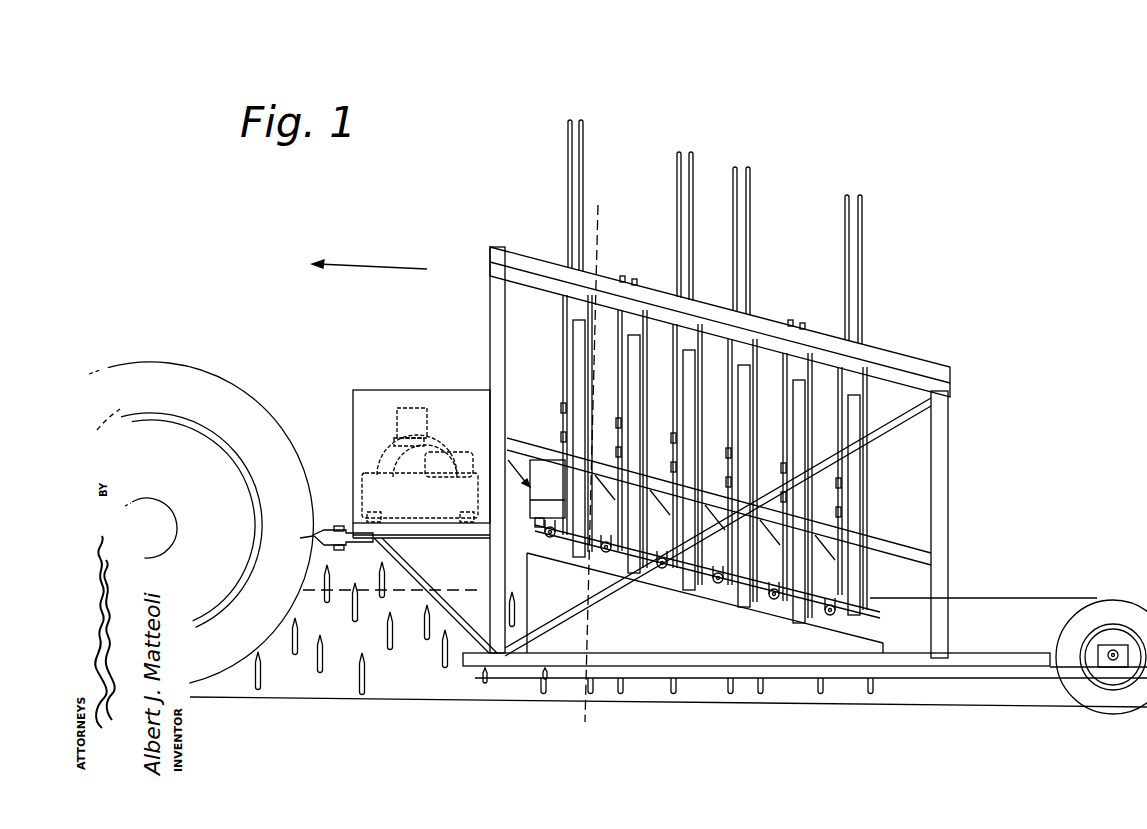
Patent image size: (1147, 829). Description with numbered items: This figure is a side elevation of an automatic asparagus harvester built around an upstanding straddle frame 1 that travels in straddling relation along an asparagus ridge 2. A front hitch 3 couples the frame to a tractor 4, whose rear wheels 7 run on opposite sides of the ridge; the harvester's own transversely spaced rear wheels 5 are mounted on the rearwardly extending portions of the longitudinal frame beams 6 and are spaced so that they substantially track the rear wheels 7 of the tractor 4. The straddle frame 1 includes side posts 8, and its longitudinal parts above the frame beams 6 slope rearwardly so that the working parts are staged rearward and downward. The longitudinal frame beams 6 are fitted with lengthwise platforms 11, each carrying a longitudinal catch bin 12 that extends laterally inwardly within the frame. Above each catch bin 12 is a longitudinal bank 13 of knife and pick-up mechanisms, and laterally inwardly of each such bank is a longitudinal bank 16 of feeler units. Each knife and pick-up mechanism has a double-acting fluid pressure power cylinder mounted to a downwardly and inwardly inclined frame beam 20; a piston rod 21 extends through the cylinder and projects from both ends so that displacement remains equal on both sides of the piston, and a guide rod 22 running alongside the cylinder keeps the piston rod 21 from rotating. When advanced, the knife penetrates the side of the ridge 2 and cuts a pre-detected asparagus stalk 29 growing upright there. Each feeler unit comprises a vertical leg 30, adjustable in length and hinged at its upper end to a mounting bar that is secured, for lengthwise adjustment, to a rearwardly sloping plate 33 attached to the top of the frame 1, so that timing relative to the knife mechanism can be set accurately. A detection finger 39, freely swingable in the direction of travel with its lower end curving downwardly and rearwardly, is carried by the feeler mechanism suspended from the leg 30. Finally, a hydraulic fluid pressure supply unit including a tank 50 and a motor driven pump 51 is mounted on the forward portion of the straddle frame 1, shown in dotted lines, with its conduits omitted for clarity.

The upstanding straddle frame 1 is at (932, 357).
The asparagus ridge 2 is at (617, 217).
The front hitch 3 is at (326, 528).
The tractor 4 is at (165, 357).
The rear wheels 5 is at (1100, 612).
The longitudinal frame beams 6 is at (1022, 672).
The rear wheels of the tractor 7 is at (262, 422).
The side posts 8 is at (492, 330).
The platforms 11 is at (977, 657).
The catch bin 12 is at (770, 647).
The bank of knife and pick-up mechanisms 13 is at (878, 479).
The bank of feeler units 16 is at (534, 539).
The inclined frame beam 20 is at (623, 357).
The piston rod 21 is at (693, 205).
The guide rod 22 is at (680, 260).
The asparagus stalk 29 is at (357, 613).
The vertical leg 30 is at (530, 488).
The rearwardly sloping plate 33 is at (522, 442).
The detection finger 39 is at (610, 560).
The tank 50 is at (374, 474).
The motor driven pump 51 is at (427, 463).